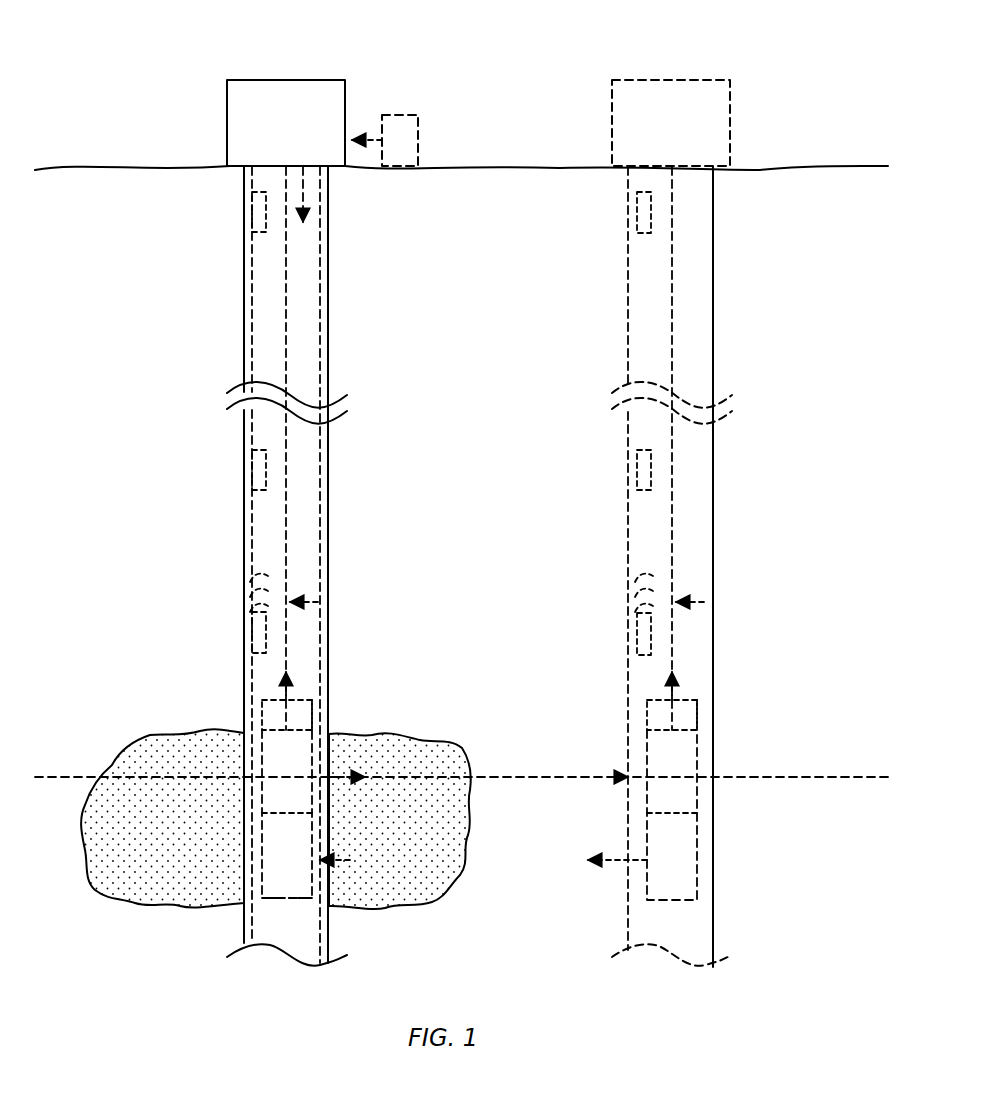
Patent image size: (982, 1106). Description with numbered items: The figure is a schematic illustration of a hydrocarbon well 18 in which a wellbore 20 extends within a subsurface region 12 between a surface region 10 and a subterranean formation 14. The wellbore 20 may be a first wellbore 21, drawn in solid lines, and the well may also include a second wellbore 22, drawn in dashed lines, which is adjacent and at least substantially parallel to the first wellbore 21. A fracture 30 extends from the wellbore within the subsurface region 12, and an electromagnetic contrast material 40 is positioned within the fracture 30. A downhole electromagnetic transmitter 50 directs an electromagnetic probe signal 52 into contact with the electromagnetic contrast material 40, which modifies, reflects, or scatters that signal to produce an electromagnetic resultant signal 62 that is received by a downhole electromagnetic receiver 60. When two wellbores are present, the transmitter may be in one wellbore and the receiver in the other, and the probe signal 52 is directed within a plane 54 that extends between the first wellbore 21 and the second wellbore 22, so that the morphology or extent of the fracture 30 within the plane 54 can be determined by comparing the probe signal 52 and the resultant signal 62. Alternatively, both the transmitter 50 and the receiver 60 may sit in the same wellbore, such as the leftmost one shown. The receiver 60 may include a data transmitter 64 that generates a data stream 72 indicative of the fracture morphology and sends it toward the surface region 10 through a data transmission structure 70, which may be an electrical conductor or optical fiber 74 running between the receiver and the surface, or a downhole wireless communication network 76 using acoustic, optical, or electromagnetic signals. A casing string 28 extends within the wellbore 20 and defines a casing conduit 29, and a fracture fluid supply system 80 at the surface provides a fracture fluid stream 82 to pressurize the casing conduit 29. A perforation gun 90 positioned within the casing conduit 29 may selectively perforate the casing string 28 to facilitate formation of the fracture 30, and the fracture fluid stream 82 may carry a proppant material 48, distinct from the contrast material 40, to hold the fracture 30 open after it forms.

The surface region 10 is at (447, 122).
The subsurface region 12 is at (483, 192).
The subterranean formation 14 is at (530, 182).
The hydrocarbon well 18 is at (516, 114).
The wellbore 20 is at (248, 322).
The first wellbore 21 is at (240, 353).
The second wellbore 22 is at (624, 356).
The casing string 28 is at (242, 242).
The casing conduit 29 is at (256, 280).
The fracture 30 is at (462, 878).
The electromagnetic contrast material 40 is at (457, 826).
The proppant material 48 is at (440, 760).
The downhole electromagnetic transmitter 50 is at (258, 718).
The electromagnetic probe signal 52 is at (350, 775).
The plane 54 is at (518, 776).
The downhole electromagnetic receiver 60 is at (260, 904).
The electromagnetic resultant signal 62 is at (345, 860).
The data transmitter 64 is at (305, 893).
The data transmission structure 70 is at (316, 602).
The data stream 72 is at (252, 576).
The optical fiber 74 is at (288, 535).
The downhole wireless communication network 76 is at (250, 212).
The fracture fluid supply system 80 is at (402, 115).
The fracture fluid stream 82 is at (365, 135).
The perforation gun 90 is at (316, 716).